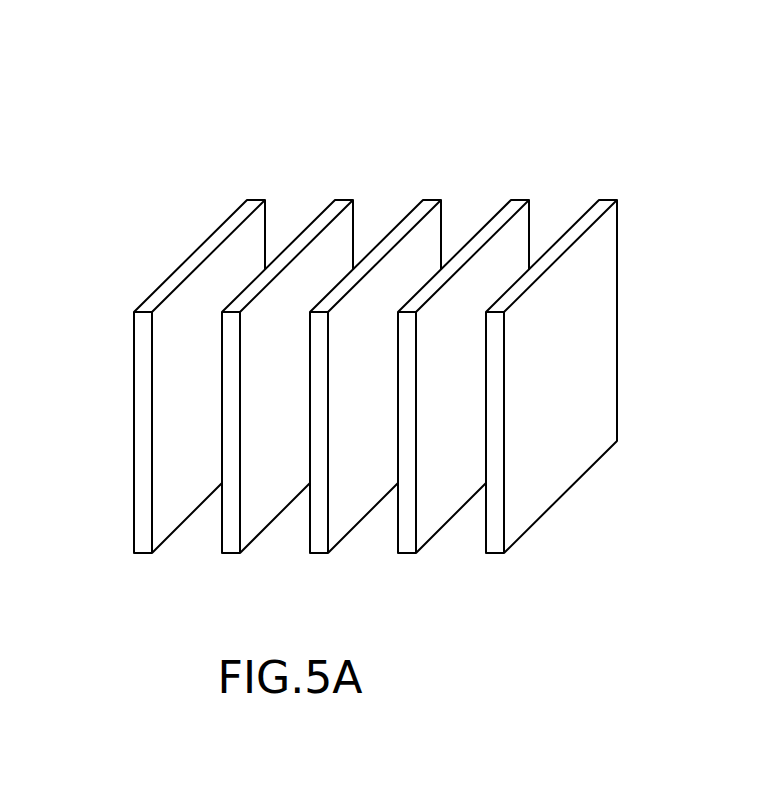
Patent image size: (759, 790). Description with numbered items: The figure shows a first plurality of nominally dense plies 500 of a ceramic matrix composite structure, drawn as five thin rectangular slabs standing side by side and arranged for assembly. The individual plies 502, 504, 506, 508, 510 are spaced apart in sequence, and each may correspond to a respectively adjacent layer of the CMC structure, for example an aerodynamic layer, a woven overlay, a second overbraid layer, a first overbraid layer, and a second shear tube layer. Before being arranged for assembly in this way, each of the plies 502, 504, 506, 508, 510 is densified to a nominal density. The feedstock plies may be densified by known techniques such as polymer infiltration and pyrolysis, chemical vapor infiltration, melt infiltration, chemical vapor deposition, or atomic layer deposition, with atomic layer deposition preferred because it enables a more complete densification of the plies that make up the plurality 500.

The first plurality of nominally dense plies 500 is at (424, 300).
The ply 502 is at (258, 198).
The ply 504 is at (344, 198).
The ply 506 is at (432, 198).
The ply 508 is at (519, 198).
The ply 510 is at (608, 198).